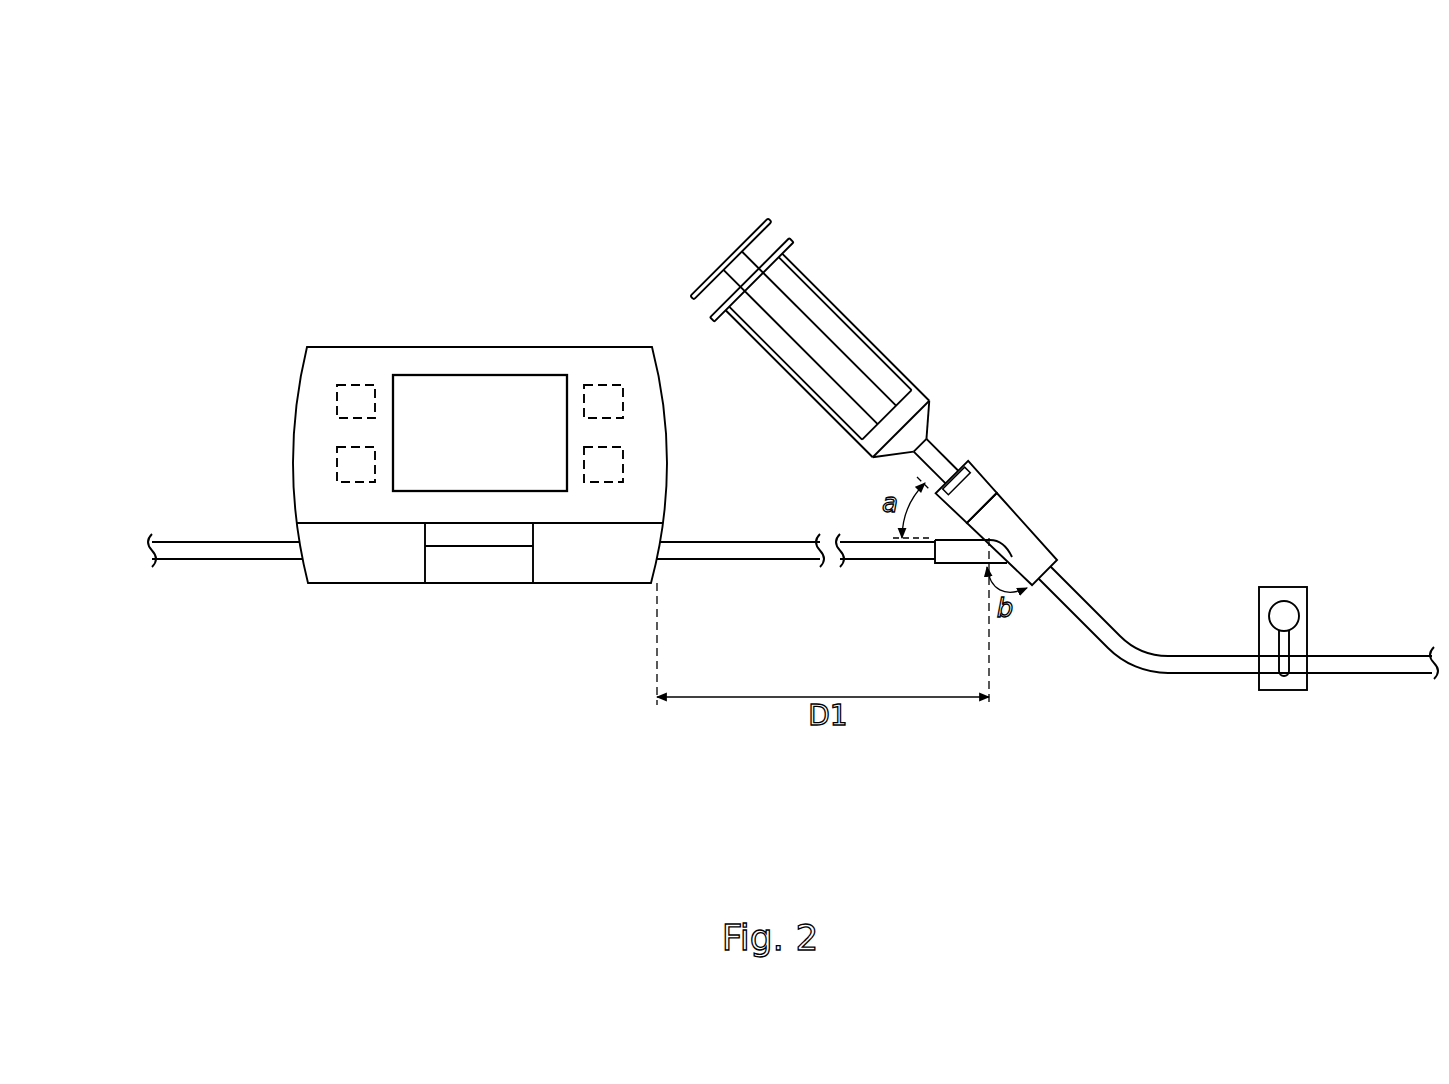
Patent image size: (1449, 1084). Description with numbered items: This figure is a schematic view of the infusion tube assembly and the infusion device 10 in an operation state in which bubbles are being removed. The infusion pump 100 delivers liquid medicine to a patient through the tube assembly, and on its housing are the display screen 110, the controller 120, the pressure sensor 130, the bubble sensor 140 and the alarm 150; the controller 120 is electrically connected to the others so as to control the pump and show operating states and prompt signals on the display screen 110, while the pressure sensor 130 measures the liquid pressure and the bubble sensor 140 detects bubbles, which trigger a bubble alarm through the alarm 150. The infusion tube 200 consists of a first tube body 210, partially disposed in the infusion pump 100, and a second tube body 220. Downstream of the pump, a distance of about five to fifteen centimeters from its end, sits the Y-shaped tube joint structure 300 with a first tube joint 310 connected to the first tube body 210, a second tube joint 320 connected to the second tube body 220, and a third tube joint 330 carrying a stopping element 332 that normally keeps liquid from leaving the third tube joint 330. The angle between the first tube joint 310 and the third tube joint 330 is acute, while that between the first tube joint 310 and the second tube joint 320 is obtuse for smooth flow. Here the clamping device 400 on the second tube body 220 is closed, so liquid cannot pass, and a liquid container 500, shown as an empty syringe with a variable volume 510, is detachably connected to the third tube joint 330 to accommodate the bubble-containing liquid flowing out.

The infusion device 10 is at (317, 68).
The infusion pump 100 is at (367, 570).
The display screen 110 is at (528, 374).
The controller 120 is at (337, 400).
The pressure sensor 130 is at (337, 463).
The bubble sensor 140 is at (623, 400).
The alarm 150 is at (623, 463).
The infusion tube 200 is at (172, 128).
The first tube body 210 is at (222, 553).
The second tube body 220 is at (1206, 665).
The tube joint structure 300 is at (172, 212).
The first tube joint 310 is at (958, 566).
The second tube joint 320 is at (1035, 534).
The third tube joint 330 is at (984, 486).
The stopping element 332 is at (975, 462).
The clamping device 400 is at (1300, 637).
The liquid container 500 is at (858, 322).
The variable volume 510 is at (804, 309).